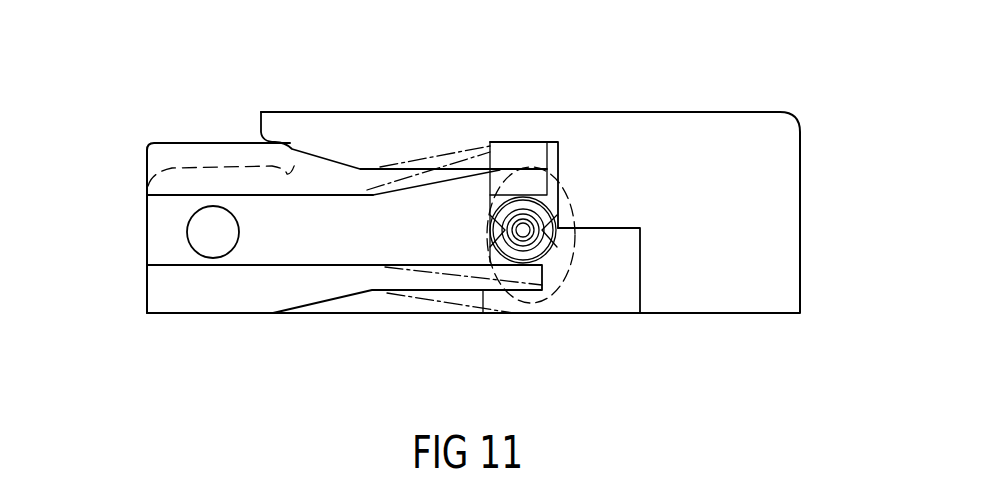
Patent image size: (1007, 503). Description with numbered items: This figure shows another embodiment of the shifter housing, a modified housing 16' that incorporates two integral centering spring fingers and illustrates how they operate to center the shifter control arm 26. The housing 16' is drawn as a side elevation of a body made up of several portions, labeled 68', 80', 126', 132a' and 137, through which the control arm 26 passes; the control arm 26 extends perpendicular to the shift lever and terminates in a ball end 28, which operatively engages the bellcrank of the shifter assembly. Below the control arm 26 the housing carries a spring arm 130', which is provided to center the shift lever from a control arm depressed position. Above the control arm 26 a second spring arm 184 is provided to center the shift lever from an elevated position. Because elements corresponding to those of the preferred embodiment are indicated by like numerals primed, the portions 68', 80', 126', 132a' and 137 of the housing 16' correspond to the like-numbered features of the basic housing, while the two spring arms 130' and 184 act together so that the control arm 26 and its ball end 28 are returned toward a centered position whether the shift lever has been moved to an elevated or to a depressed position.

The modified housing 16' is at (526, 205).
The control arm 26 is at (556, 240).
The ball end 28 is at (562, 210).
The upper body 68' is at (404, 94).
The body block 80' is at (686, 189).
The clamp block 126' is at (564, 161).
The spring arm 130' is at (344, 321).
The bore 132a' is at (147, 224).
The surface 137 is at (318, 152).
The second spring arm 184 is at (410, 173).